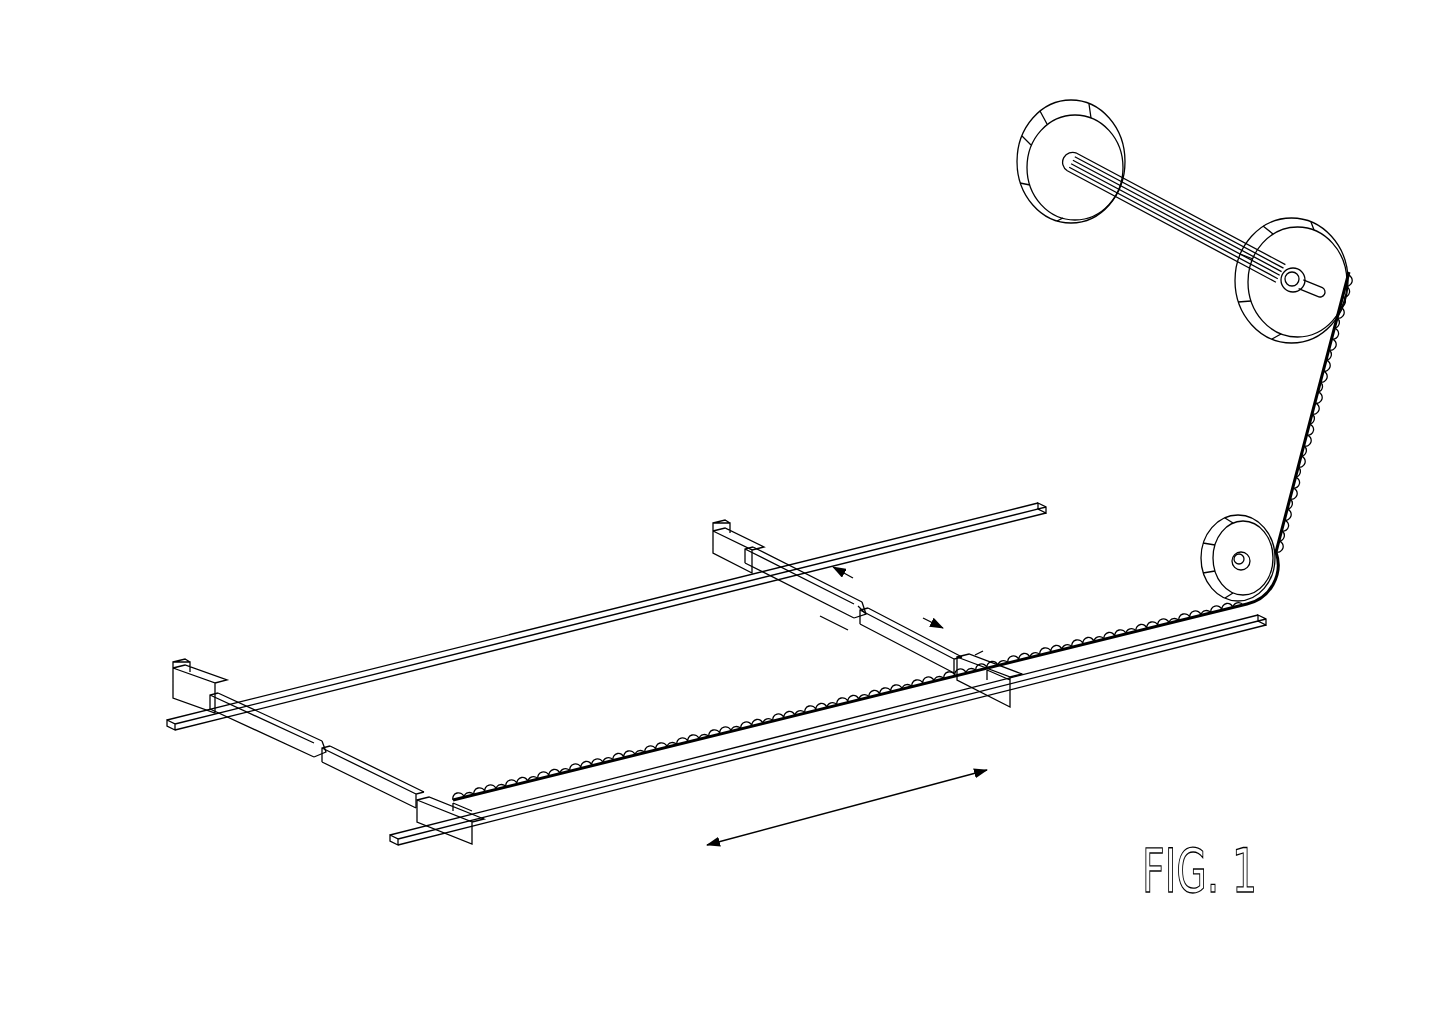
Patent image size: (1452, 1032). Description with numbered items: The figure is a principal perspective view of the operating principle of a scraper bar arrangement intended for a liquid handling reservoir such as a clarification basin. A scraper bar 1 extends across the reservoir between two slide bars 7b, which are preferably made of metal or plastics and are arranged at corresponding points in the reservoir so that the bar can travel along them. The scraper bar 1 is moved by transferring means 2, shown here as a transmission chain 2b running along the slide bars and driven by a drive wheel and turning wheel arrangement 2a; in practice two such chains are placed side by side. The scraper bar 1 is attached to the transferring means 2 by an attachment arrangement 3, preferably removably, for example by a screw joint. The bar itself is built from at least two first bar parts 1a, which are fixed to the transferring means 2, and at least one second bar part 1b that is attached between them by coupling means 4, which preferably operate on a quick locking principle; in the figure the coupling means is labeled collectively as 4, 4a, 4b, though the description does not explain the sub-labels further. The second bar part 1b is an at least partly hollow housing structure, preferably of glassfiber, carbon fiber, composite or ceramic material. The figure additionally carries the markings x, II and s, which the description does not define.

The scraper bar 1 is at (837, 584).
The first bar parts 1a is at (728, 549).
The second bar part 1b is at (823, 613).
The transferring means 2 is at (931, 436).
The drive wheel and turning wheel arrangement 2a is at (1193, 530).
The transmission chains 2b is at (1315, 430).
The attachment arrangement 3 is at (982, 647).
The coupling means 4 is at (856, 533).
The first crossbar segment 4a is at (805, 582).
The second crossbar segment 4b is at (968, 643).
The slide bars 7b is at (187, 724).
The adjustment direction x is at (897, 597).
The section line II is at (850, 632).
The travel path s is at (847, 808).